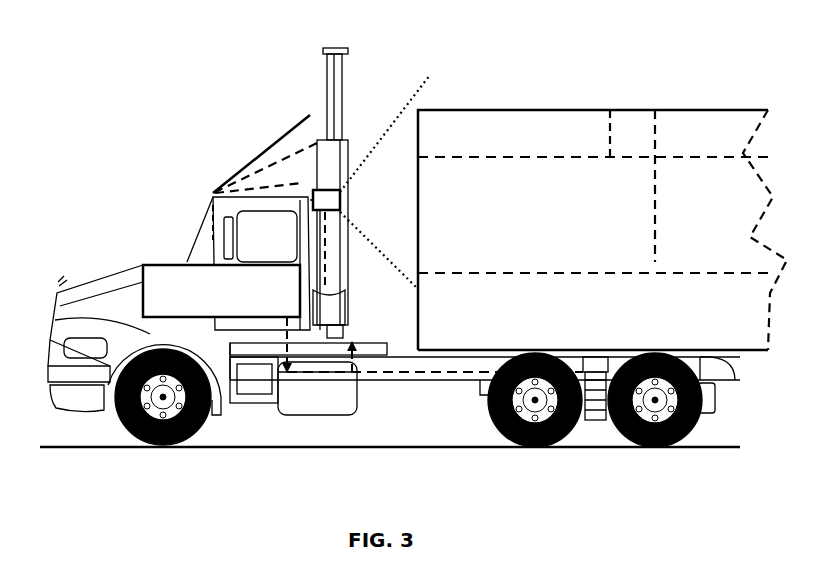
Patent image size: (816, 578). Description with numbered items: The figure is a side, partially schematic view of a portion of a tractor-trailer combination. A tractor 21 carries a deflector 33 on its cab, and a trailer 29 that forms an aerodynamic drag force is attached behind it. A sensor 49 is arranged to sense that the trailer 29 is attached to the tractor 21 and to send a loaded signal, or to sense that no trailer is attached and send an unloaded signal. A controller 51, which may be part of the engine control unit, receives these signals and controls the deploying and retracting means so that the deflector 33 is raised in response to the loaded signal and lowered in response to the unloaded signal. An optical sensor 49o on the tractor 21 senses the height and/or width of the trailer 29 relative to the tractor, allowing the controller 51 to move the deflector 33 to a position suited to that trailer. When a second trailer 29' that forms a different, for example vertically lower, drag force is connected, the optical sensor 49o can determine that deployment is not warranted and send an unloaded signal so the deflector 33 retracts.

The tractor 21 is at (106, 271).
The controller 51 is at (158, 260).
The deflector 33 is at (262, 152).
The optical sensor 49o is at (331, 189).
The trailer 29 is at (602, 197).
The second trailer 29' is at (675, 161).
The sensor 49 is at (590, 374).